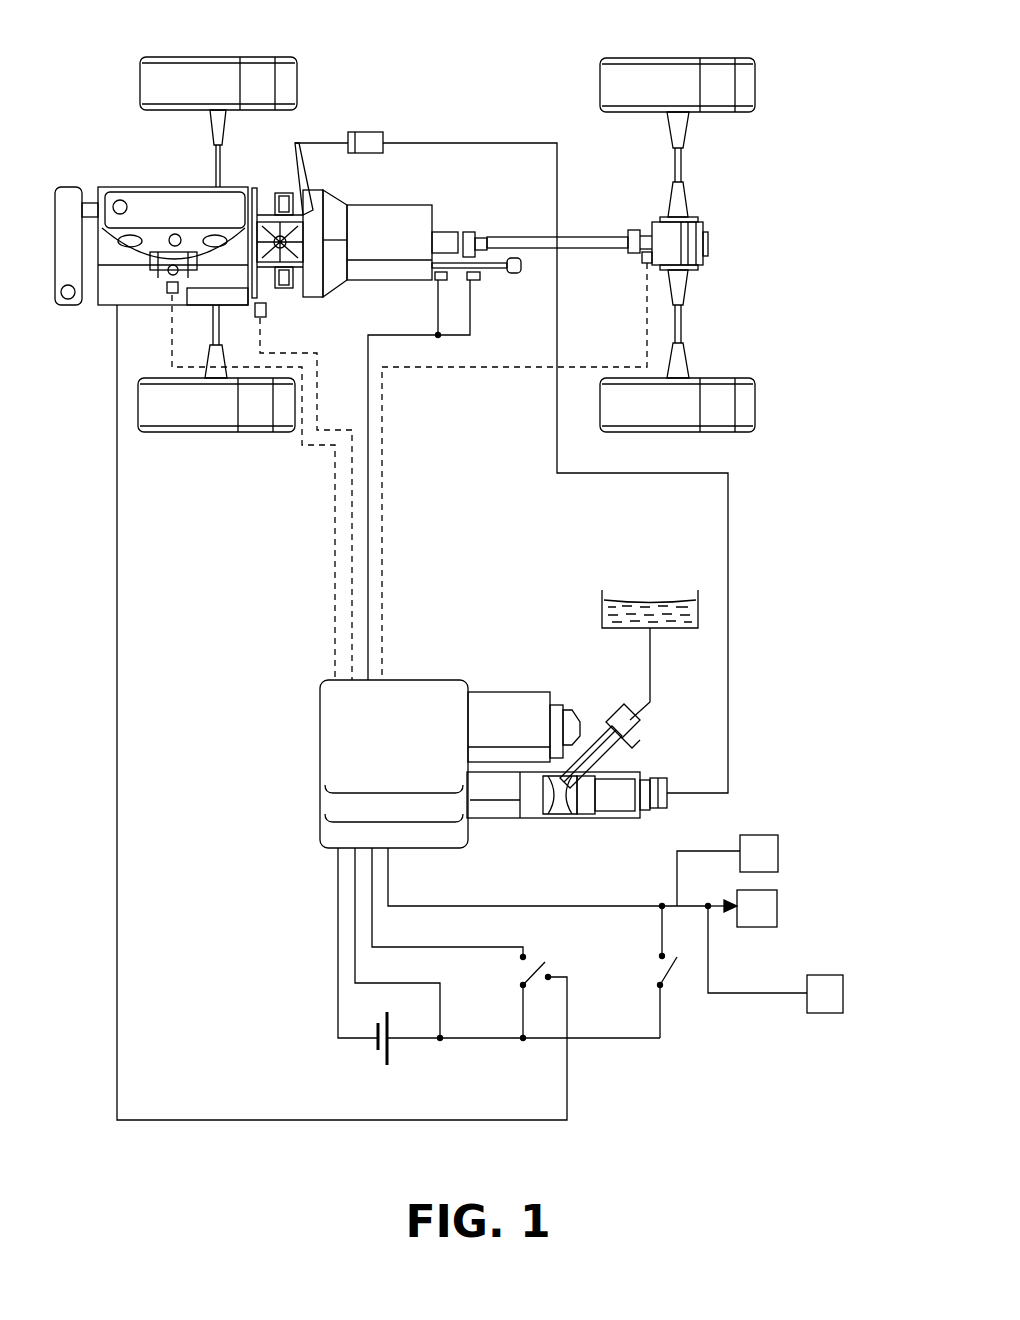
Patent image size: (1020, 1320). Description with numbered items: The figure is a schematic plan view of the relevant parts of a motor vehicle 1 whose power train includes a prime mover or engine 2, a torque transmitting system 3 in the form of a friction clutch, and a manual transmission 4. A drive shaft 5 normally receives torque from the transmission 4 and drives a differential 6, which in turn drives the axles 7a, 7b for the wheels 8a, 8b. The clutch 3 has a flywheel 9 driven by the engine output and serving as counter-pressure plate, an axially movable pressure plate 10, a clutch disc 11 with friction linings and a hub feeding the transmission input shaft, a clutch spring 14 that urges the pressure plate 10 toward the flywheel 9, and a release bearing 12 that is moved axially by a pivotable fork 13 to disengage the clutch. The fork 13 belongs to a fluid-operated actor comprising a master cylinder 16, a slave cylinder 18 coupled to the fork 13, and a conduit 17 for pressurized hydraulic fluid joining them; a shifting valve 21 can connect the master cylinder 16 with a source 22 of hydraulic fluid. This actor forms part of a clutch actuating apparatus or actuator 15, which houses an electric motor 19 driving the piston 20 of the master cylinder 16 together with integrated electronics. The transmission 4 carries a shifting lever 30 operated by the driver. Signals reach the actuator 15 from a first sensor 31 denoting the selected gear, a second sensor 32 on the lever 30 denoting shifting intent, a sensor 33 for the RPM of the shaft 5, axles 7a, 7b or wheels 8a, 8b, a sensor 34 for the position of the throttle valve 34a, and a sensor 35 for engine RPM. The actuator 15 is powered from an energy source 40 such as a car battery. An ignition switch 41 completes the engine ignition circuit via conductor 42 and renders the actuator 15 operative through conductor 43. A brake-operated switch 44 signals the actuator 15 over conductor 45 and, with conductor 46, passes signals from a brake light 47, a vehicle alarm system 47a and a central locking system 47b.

The motor vehicle 1 is at (466, 74).
The prime mover 2 is at (138, 200).
The torque transmitting system 3 is at (259, 186).
The manual transmission 4 is at (375, 256).
The drive shaft 5 is at (590, 240).
The differential 6 is at (705, 243).
The axle 7a is at (683, 165).
The axle 7b is at (683, 325).
The wheel 8a is at (735, 88).
The wheel 8b is at (735, 405).
The flywheel 9 is at (263, 278).
The pressure plate 10 is at (284, 283).
The clutch disc 11 is at (279, 193).
The release bearing 12 is at (308, 245).
The fork 13 is at (305, 170).
The clutch spring 14 is at (298, 222).
The clutch actuating apparatus 15 is at (320, 757).
The master cylinder 16 is at (612, 820).
The conduit 17 is at (728, 535).
The slave cylinder 18 is at (368, 132).
The electric motor 19 is at (500, 692).
The piston 20 is at (592, 790).
The shifting valve 21 is at (616, 724).
The source of hydraulic fluid 22 is at (650, 610).
The lever 30 is at (516, 273).
The first sensor 31 is at (437, 280).
The second sensor 32 is at (474, 282).
The sensor 33 is at (645, 262).
The sensor 34 is at (170, 293).
The throttle valve 34a is at (168, 258).
The sensor 35 is at (258, 318).
The energy source 40 is at (375, 1059).
The ignition switch 41 is at (518, 970).
The conductor 42 is at (568, 1065).
The conductor 43 is at (458, 947).
The switch 44 is at (654, 970).
The conductor 45 is at (606, 906).
The conductor 46 is at (684, 906).
The brake light 47 is at (757, 917).
The vehicle alarm system 47a is at (830, 980).
The central locking system 47b is at (770, 852).